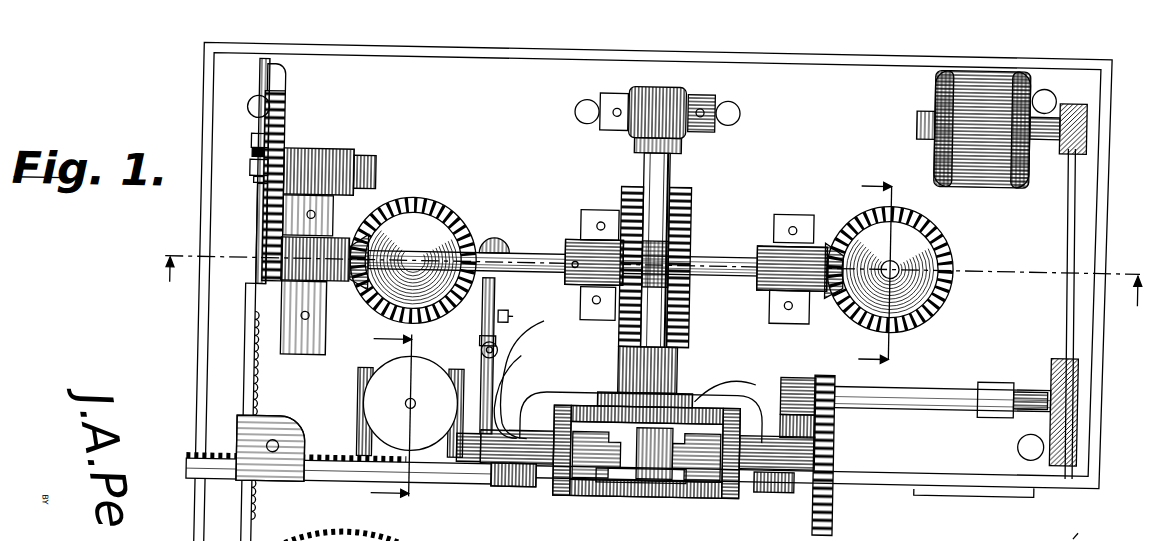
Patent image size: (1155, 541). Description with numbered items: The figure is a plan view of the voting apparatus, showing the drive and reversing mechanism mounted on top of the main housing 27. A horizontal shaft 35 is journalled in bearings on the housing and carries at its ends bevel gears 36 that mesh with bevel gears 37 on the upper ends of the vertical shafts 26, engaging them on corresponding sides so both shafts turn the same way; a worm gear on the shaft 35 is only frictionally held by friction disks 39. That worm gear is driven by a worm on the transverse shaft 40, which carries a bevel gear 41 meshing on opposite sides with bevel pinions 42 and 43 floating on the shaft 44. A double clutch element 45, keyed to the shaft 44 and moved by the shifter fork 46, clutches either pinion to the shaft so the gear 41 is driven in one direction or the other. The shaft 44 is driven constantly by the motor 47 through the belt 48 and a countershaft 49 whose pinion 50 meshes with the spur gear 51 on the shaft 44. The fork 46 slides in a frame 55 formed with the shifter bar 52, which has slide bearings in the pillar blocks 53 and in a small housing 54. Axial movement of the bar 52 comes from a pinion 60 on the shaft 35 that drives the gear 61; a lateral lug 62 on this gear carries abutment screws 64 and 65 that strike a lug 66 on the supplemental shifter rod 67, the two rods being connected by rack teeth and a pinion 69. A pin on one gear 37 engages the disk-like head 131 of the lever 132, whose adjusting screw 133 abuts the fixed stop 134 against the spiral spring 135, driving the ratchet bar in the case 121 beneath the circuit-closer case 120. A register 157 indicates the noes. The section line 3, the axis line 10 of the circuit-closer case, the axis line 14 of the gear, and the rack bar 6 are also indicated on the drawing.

The section line 3- 3 is at (656, 292).
The rack bar 6 is at (245, 381).
The axis line of disc 10 is at (376, 416).
The axis line of gear 14 is at (880, 275).
The shaft 26 is at (882, 261).
The housing 27 is at (1086, 480).
The horizontal shaft 35 is at (718, 253).
The bevel gear 36 is at (374, 199).
The bevel gear 37 is at (441, 205).
The friction disk 39 is at (619, 193).
The transverse shaft 40 is at (671, 169).
The bevel gear 41 is at (702, 398).
The bevel pinion 42 is at (782, 379).
The bevel pinion 43 is at (524, 358).
The shaft 44 is at (598, 480).
The double clutch element 45 is at (654, 479).
The shifter fork 46 is at (690, 480).
The motor 47 is at (985, 181).
The belt 48 is at (1075, 231).
The countershaft 49 is at (950, 404).
The pinion 50 is at (837, 372).
The spur gear 51 is at (820, 441).
The shifter bar 52 is at (478, 468).
The pillar block 53 is at (516, 490).
The housing 54 is at (285, 430).
The frame 55 is at (616, 483).
The pinion 60 is at (281, 272).
The gear 61 is at (284, 113).
The lateral lug 62 is at (250, 176).
The abutment screw 64 is at (256, 205).
The abutment screw 65 is at (250, 157).
The lug 66 is at (251, 140).
The supplemental shifter rod 67 is at (274, 70).
The pinion 69 is at (1085, 531).
The case 120 is at (370, 389).
The case 121 is at (356, 473).
The disk-like head 131 is at (496, 240).
The lever 132 is at (546, 323).
The adjusting screw 133 is at (509, 313).
The fixed stop 134 is at (481, 343).
The spiral spring 135 is at (483, 353).
The register 157 is at (942, 490).